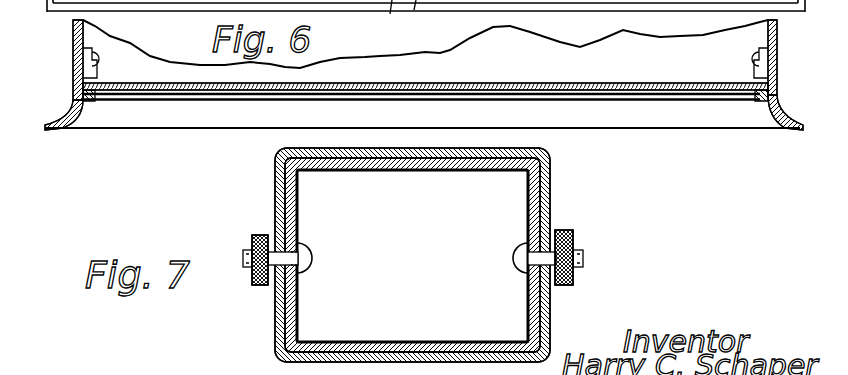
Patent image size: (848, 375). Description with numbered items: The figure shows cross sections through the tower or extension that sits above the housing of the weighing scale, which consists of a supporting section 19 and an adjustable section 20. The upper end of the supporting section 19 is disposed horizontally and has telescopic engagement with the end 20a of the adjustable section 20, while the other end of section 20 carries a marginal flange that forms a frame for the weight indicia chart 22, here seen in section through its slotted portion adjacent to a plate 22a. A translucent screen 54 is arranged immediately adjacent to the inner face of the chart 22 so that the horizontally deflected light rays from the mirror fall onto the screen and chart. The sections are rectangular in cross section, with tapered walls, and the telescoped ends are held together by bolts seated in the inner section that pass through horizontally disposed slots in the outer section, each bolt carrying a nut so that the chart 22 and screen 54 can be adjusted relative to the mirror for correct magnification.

In FIG. 7, the supporting section 19 is at (443, 171).
In FIG. 6, the adjustable section 20 is at (73, 34).
In FIG. 7, the end of section 20 20a is at (550, 184).
In FIG. 6, the weight indicia chart 22 is at (162, 97).
In FIG. 6, the plate 22a is at (408, 18).
In FIG. 6, the translucent screen 54 is at (498, 83).